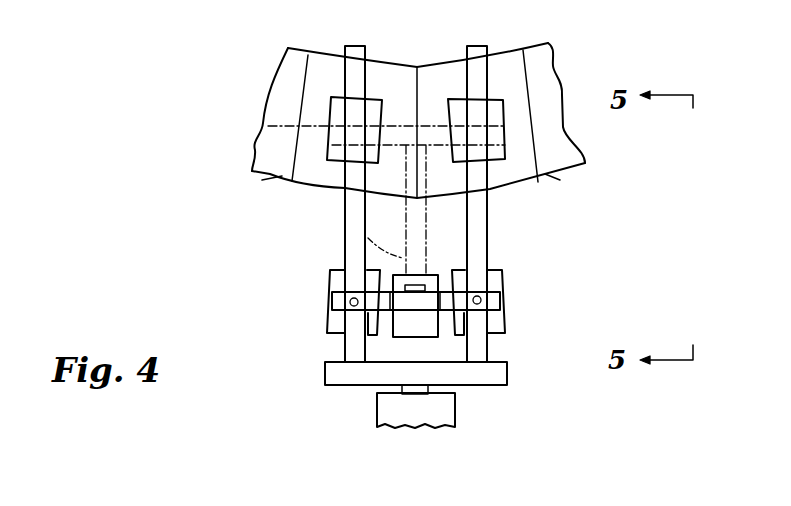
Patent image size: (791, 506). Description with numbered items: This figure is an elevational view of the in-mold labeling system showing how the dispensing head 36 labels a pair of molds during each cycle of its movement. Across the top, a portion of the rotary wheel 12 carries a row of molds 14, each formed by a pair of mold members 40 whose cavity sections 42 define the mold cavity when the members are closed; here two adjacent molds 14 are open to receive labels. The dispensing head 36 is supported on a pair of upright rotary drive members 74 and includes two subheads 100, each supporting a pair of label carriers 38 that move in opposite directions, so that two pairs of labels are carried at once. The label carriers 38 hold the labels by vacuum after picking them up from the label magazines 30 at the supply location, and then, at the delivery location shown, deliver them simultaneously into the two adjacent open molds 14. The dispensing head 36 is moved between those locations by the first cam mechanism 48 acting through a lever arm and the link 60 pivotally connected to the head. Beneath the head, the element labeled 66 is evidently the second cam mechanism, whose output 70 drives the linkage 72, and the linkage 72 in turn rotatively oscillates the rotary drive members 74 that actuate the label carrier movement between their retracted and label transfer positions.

The rotary wheel 12 is at (572, 50).
The molds 14 is at (300, 40).
The cavity sections 42 is at (335, 108).
The dispensing head 36 is at (329, 137).
The mold members 40 is at (272, 168).
The rotary drive members 74 is at (342, 262).
The first cam mechanism 48 is at (433, 275).
The link 60 is at (400, 287).
The label magazine 30 is at (330, 317).
The subheads 100 is at (332, 282).
The label carrier 38 is at (352, 306).
The linkage 72 is at (325, 380).
The output of the second cam mechanism 70 is at (400, 390).
The lower block 66 is at (455, 410).